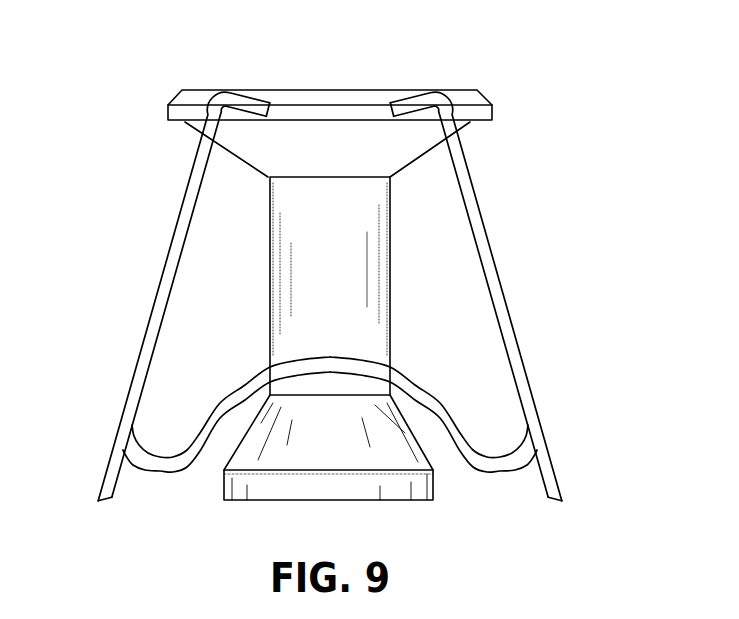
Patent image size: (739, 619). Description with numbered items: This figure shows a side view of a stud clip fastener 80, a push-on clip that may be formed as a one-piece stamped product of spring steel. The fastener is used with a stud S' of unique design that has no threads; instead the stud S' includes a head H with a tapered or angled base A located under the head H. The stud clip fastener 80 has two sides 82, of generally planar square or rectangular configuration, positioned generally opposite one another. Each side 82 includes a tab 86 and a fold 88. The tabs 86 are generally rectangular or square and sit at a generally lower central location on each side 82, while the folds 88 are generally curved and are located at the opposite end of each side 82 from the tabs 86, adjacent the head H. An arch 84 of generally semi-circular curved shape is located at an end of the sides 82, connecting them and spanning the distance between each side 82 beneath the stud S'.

The stud clip fastener 80 is at (536, 67).
The sides 82 is at (160, 275).
The arch 84 is at (245, 383).
The tab 86 is at (105, 470).
The fold 88 is at (260, 106).
The head H is at (332, 98).
The angled base A is at (413, 165).
The stud S' is at (364, 286).